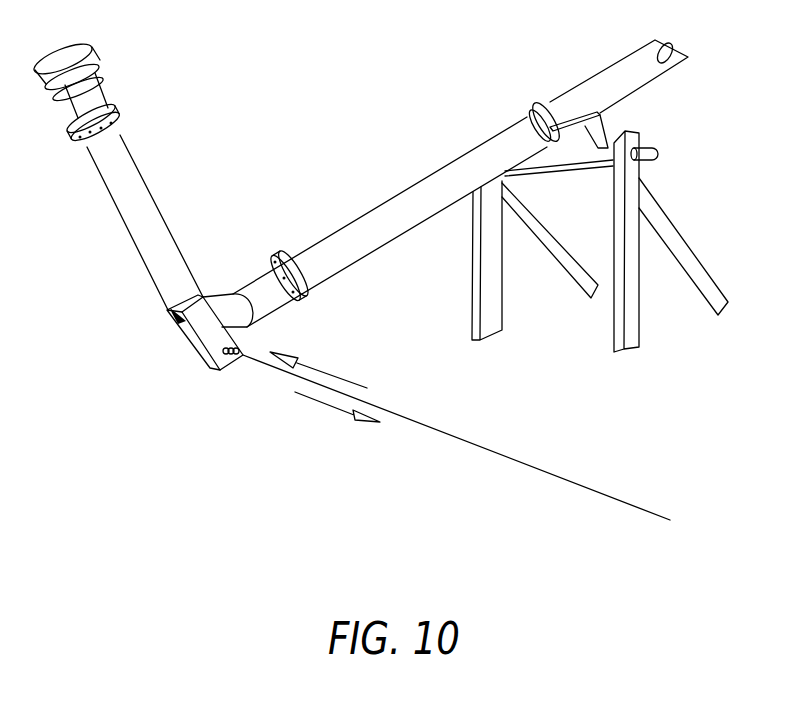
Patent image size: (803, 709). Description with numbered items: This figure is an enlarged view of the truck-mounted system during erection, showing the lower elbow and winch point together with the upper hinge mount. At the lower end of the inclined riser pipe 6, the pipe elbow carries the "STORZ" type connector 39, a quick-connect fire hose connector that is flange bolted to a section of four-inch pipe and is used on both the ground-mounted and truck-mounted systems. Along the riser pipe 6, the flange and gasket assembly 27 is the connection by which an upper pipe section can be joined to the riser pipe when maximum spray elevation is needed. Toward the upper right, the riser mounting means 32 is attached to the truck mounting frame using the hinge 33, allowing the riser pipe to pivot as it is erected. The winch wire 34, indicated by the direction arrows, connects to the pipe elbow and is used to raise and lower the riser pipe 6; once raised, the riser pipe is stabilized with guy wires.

The "STORZ" type connector 39 is at (90, 63).
The flange and gasket assembly 27 is at (120, 112).
The riser pipe 6 is at (403, 190).
The riser mounting means 32 is at (618, 113).
The hinge 33 is at (653, 158).
The winch wire 34 is at (352, 409).